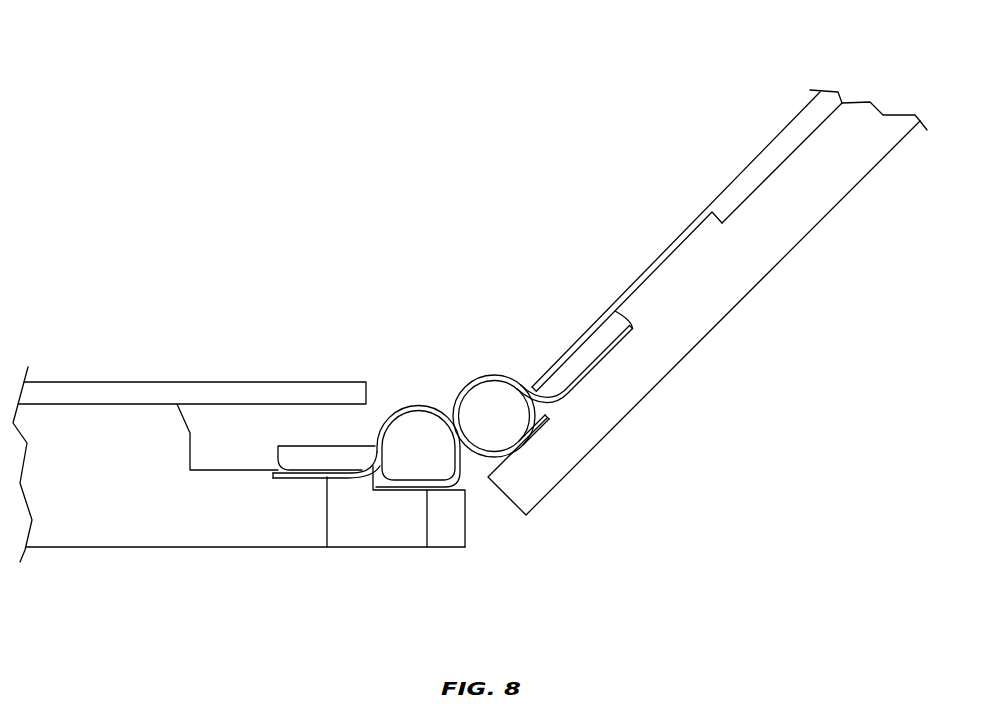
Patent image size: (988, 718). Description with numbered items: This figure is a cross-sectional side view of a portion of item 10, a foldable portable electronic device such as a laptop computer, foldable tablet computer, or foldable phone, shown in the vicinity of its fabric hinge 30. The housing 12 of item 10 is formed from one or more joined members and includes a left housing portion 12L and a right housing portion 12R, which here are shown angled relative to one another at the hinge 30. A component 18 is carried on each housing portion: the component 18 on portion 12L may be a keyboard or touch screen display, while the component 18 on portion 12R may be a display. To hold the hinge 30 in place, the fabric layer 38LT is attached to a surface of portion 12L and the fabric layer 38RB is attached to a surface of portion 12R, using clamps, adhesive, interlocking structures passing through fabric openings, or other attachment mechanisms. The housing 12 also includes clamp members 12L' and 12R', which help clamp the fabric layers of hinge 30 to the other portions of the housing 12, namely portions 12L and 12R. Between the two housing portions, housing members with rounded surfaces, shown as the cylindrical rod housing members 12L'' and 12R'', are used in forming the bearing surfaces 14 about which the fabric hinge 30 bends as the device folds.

The item 10 is at (498, 90).
The housing 12 is at (167, 599).
The housing portion 12L is at (239, 487).
The housing portion 12R is at (707, 302).
The clamp member 12L' is at (326, 402).
The clamp member 12R' is at (627, 301).
The cylindrical rod housing member 12L'' is at (418, 423).
The cylindrical rod housing member 12R'' is at (543, 386).
The bearing surfaces 14 is at (442, 405).
The component 18 is at (98, 393).
The hinge 30 is at (471, 465).
The fabric layer 38LT is at (303, 476).
The fabric layer 38RB is at (551, 418).